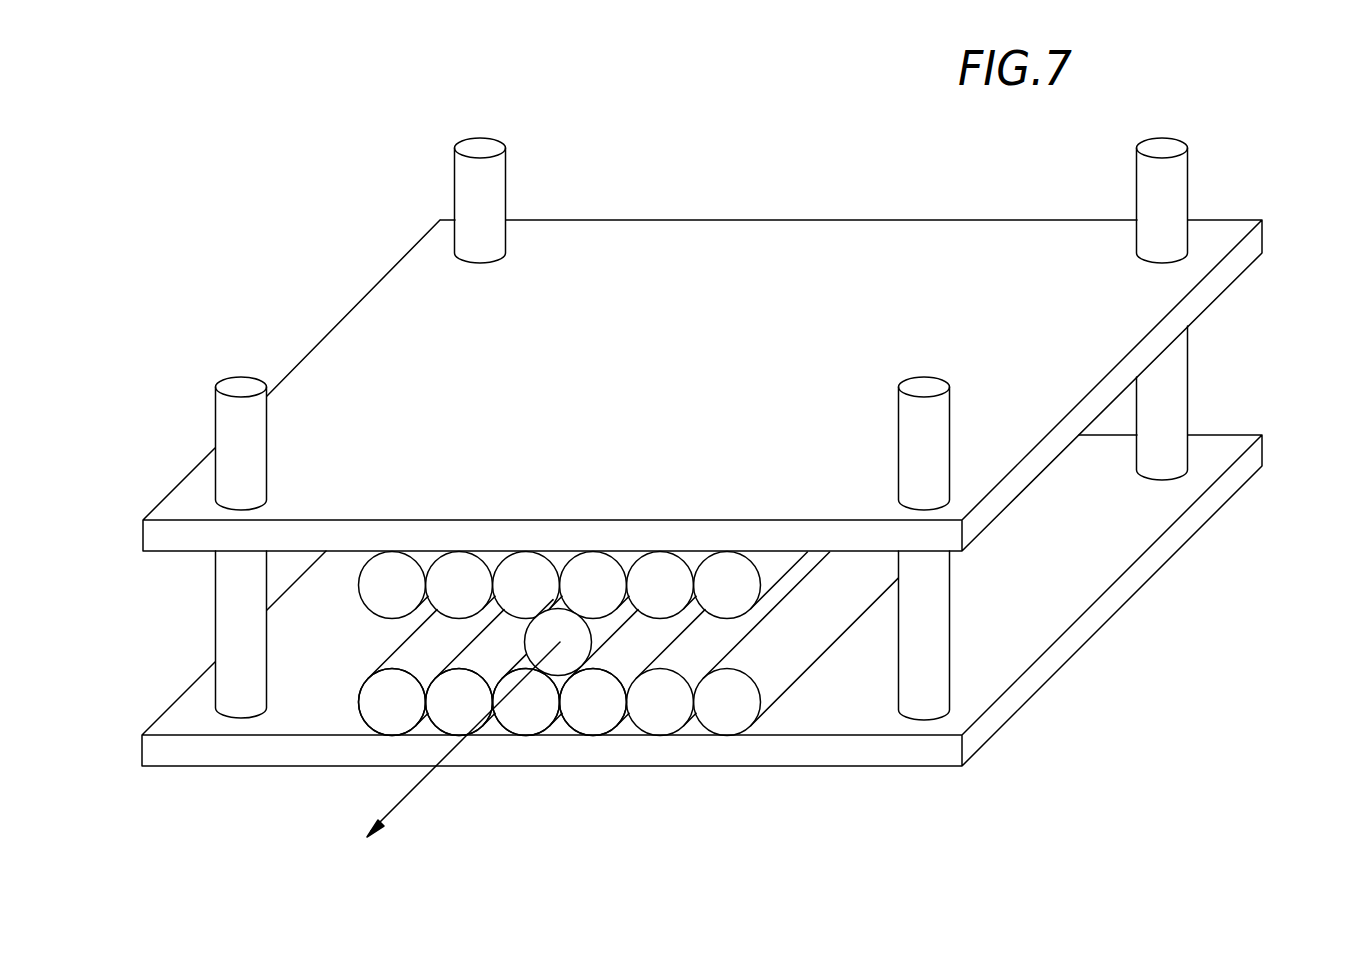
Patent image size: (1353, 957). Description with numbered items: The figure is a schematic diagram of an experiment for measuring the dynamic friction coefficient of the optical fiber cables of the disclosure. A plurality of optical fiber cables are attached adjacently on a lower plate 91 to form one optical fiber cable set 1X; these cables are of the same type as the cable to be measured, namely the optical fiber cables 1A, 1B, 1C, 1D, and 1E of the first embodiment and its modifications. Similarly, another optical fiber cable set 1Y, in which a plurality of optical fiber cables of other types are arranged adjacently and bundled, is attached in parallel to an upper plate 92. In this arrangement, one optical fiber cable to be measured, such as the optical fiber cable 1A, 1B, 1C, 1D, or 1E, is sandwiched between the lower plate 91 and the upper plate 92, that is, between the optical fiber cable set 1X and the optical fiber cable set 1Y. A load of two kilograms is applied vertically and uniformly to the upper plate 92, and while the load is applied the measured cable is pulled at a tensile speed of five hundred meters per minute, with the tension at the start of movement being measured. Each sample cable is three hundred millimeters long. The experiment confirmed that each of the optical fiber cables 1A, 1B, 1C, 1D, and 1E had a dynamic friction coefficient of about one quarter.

The lower plate 91 is at (1032, 608).
The upper plate 92 is at (1103, 325).
The optical fiber cable 1A is at (578, 652).
The optical fiber cable 1B is at (392, 702).
The optical fiber cable 1C is at (459, 702).
The optical fiber cable 1D is at (526, 702).
The optical fiber cable 1E is at (593, 702).
The optical fiber cable set 1X is at (760, 738).
The optical fiber cable set 1Y is at (760, 545).